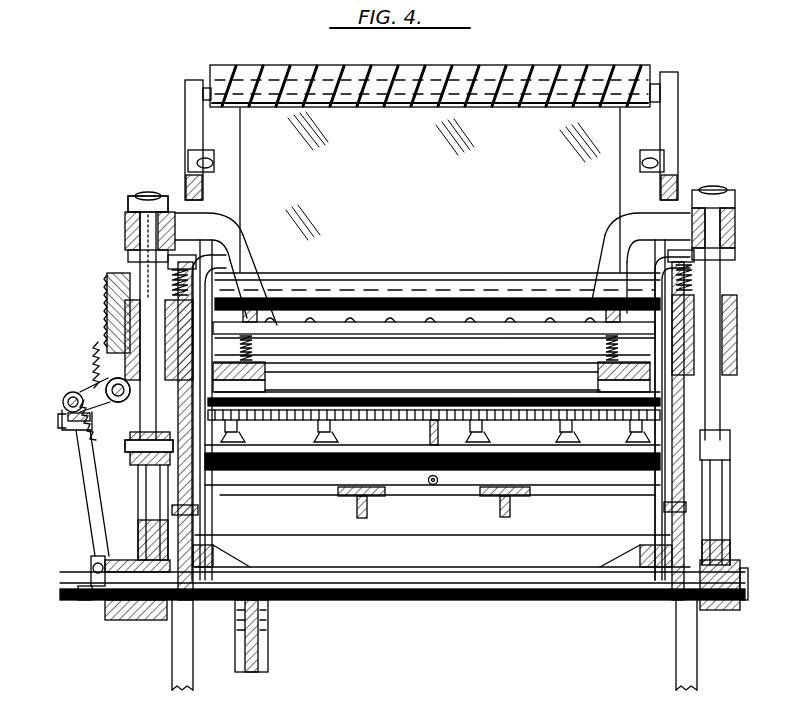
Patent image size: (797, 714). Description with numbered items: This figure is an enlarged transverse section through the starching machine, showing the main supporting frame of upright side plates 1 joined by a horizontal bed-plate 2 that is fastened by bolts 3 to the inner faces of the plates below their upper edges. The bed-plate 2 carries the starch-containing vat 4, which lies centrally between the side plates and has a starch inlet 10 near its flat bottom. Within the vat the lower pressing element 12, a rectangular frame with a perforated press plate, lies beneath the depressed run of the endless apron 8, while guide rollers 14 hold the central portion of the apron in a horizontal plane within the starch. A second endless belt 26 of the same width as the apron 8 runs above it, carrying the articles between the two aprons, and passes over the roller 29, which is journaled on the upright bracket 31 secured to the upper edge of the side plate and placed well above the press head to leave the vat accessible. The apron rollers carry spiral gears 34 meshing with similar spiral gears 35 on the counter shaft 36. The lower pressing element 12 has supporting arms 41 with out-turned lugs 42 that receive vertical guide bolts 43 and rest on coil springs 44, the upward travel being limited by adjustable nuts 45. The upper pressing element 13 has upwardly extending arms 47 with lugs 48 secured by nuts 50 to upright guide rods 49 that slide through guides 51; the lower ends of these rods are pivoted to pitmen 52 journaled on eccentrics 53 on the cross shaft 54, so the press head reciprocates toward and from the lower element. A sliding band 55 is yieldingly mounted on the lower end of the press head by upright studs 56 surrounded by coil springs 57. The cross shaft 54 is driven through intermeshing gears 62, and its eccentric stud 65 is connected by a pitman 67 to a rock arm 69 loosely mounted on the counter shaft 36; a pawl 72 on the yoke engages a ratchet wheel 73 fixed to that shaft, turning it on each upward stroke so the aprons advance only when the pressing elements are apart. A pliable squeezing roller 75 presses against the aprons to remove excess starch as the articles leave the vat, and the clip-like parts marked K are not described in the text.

The side plates 1 is at (172, 680).
The bed-plate 2 is at (495, 488).
The bolts 3 is at (178, 512).
The starch-containing vat 4 is at (413, 488).
The endless apron 8 is at (352, 424).
The starch inlet 10 is at (433, 486).
The lower pressing element 12 is at (422, 425).
The upper pressing element 13 is at (430, 330).
The guide rollers 14 is at (552, 447).
The endless belt 26 is at (395, 168).
The roller 29 is at (428, 60).
The upright bracket 31 is at (194, 141).
The spiral gears 34 is at (110, 300).
The spiral gears 35 is at (93, 350).
The counter shaft 36 is at (124, 422).
The supporting arms 41 is at (222, 379).
The apertured lugs 42 is at (667, 234).
The guide bolts 43 is at (196, 266).
The coil springs 44 is at (188, 292).
The adjustable nuts 45 is at (126, 240).
The upwardly extending arms 47 is at (243, 242).
The apertured lugs 48 is at (128, 209).
The guide rods 49 is at (140, 270).
The nuts 50 is at (146, 197).
The guides 51 is at (165, 335).
The pitmen 52 is at (148, 492).
The eccentrics 53 is at (150, 620).
The cross shaft 54 is at (447, 600).
The sliding band 55 is at (500, 378).
The upright studs 56 is at (256, 304).
The coil springs 57 is at (252, 334).
The intermeshing gears 62 is at (250, 672).
The eccentric stud 65 is at (78, 592).
The pitman 67 is at (92, 520).
The rock arm 69 is at (63, 402).
The pawl 72 is at (86, 385).
The ratchet wheel 73 is at (92, 432).
The pliable squeezing roller 75 is at (430, 282).
The clip K is at (614, 362).